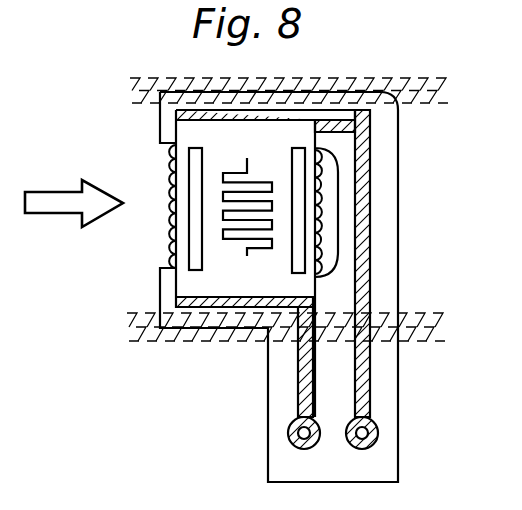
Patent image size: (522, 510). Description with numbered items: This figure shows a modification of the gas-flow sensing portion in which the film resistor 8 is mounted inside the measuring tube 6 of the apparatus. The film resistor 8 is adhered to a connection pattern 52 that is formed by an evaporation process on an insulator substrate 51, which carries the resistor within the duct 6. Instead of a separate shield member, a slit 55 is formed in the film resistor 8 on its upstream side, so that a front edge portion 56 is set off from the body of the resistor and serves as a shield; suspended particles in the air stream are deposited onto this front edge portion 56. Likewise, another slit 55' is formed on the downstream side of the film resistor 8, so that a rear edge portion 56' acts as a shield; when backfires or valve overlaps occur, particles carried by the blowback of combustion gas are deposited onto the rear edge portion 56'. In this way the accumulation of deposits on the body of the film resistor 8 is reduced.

The measuring tube 6 is at (452, 100).
The film resistor 8 is at (195, 285).
The insulator substrate 51 is at (268, 405).
The connection pattern 52 is at (313, 386).
The slit 55 is at (153, 209).
The front edge portion 56 is at (142, 221).
The slit 55' is at (372, 210).
The rear edge portion 56' is at (384, 268).